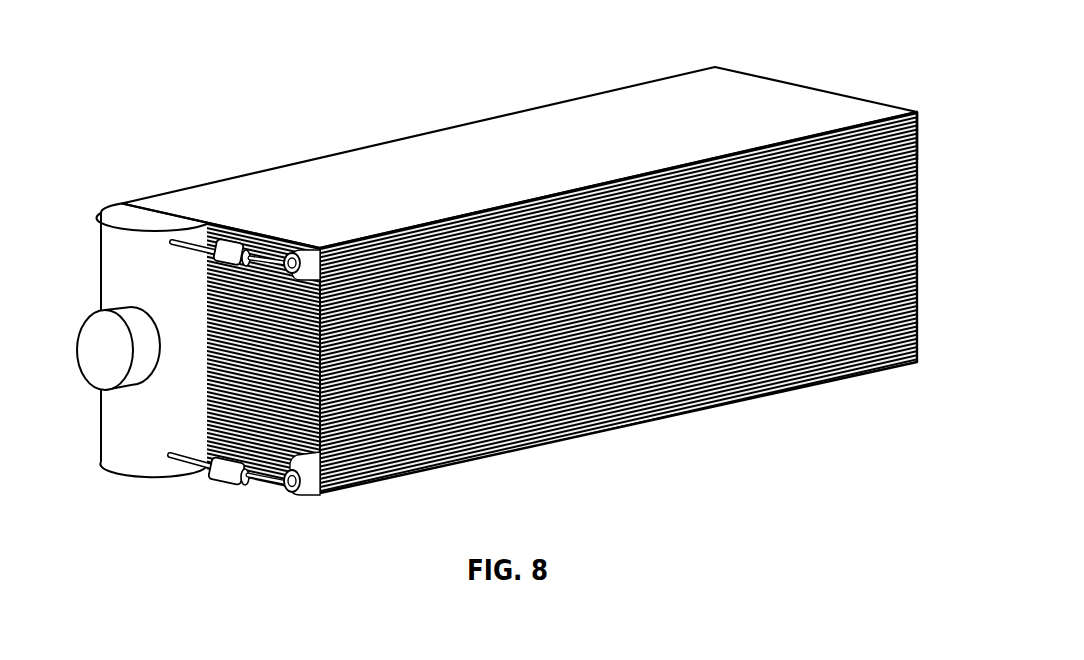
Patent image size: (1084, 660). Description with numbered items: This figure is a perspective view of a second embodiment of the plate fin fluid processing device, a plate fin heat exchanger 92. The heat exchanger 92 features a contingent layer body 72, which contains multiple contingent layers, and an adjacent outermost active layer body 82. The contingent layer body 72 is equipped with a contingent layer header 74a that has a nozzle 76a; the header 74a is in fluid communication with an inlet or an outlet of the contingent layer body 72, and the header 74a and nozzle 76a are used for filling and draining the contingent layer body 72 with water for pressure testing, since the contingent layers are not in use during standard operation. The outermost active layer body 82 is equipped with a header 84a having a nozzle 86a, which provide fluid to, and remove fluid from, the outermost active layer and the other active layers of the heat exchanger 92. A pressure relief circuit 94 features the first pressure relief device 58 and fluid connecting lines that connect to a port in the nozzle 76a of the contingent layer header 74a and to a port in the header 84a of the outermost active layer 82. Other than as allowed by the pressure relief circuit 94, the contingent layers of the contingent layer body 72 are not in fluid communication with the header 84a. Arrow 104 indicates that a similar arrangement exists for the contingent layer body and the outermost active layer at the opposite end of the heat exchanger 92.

The plate fin heat exchanger 92 is at (500, 85).
The pressure relief circuit 94 is at (222, 212).
The first pressure relief device 58 is at (236, 240).
The nozzle 76a is at (297, 245).
The contingent layer header 74a is at (310, 250).
The header 84a is at (130, 288).
The nozzle 86a is at (108, 377).
The contingent layer body 72 is at (920, 113).
The outermost active layer body 82 is at (920, 151).
The arrow 104 is at (275, 505).